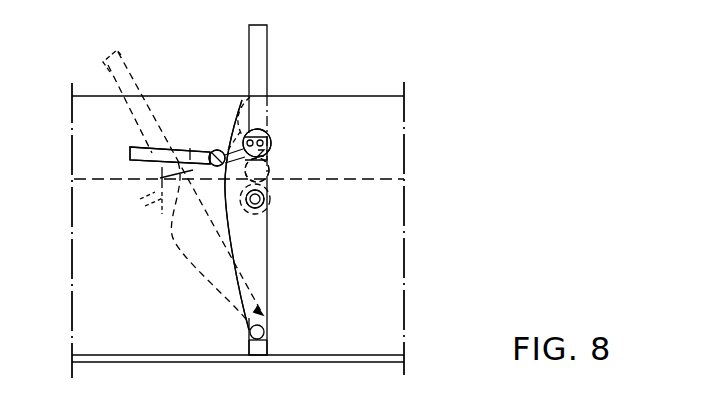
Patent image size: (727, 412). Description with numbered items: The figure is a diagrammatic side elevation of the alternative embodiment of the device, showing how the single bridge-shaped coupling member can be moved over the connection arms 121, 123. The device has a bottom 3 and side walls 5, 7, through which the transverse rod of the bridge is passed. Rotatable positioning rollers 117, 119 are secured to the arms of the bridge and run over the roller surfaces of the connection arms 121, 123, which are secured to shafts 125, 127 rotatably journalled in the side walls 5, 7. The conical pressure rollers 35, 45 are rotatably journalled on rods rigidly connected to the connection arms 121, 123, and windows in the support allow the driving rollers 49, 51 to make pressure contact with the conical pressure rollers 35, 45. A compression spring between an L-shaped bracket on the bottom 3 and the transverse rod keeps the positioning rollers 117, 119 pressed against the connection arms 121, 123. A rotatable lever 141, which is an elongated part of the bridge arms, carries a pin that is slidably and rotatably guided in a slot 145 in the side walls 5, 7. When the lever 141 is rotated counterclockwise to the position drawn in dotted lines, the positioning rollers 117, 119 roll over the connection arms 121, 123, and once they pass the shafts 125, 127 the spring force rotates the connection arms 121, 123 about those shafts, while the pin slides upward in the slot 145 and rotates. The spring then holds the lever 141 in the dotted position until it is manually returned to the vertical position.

The bottom 3 is at (325, 357).
The side wall 5 is at (392, 300).
The side wall 7 is at (258, 230).
The conical pressure roller 35 is at (267, 95).
The conical pressure roller 45 is at (298, 125).
The driving roller 49 is at (272, 206).
The driving roller 51 is at (300, 208).
The positioning roller 117 is at (272, 145).
The positioning roller 119 is at (204, 163).
The connection arm 121 is at (190, 148).
The connection arm 123 is at (188, 201).
The shaft 125 is at (218, 150).
The shaft 127 is at (203, 101).
The rotatable lever 141 is at (107, 67).
The slot 145 is at (247, 339).